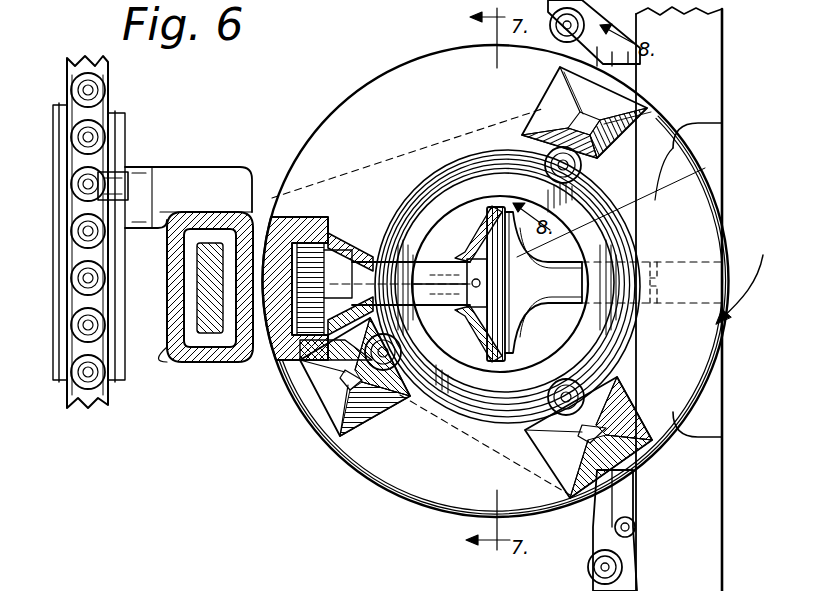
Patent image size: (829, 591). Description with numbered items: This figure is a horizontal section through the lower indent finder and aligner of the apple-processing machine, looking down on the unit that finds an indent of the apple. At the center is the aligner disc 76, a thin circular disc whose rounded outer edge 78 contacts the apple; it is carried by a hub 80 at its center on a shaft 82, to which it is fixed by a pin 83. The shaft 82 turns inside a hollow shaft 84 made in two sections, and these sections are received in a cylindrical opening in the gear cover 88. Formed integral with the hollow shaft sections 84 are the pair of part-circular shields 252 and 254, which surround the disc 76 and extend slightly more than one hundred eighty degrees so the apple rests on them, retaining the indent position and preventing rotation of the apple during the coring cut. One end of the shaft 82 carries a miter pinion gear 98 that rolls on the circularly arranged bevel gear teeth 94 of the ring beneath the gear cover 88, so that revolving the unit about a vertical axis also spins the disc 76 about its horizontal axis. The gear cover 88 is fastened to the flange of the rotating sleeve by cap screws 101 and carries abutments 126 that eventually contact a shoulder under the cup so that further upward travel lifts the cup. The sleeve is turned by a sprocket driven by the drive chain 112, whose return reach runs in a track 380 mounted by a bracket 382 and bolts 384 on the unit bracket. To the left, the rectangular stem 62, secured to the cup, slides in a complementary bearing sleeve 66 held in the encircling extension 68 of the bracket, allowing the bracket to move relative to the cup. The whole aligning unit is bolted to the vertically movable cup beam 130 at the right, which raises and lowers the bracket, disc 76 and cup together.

The stem 62 is at (210, 255).
The bearing sleeve 66 is at (212, 363).
The encircling extension 68 is at (170, 361).
The aligner disc 76 is at (485, 312).
The outer edge 78 is at (496, 205).
The hub 80 is at (466, 250).
The shaft 82 is at (467, 268).
The pin 83 is at (460, 306).
The hollow shaft 84 is at (360, 263).
The gear cover 88 is at (742, 279).
The bevel gear teeth 94 is at (305, 240).
The miter pinion gear 98 is at (300, 352).
The cap screws 101 is at (568, 165).
The drive chain 112 is at (88, 408).
The abutments 126 is at (602, 100).
The cup beam 130 is at (705, 46).
The part-circular shield 252 is at (655, 200).
The part-circular shield 254 is at (436, 195).
The track 380 is at (58, 376).
The bracket 382 is at (140, 186).
The bolts 384 is at (104, 201).